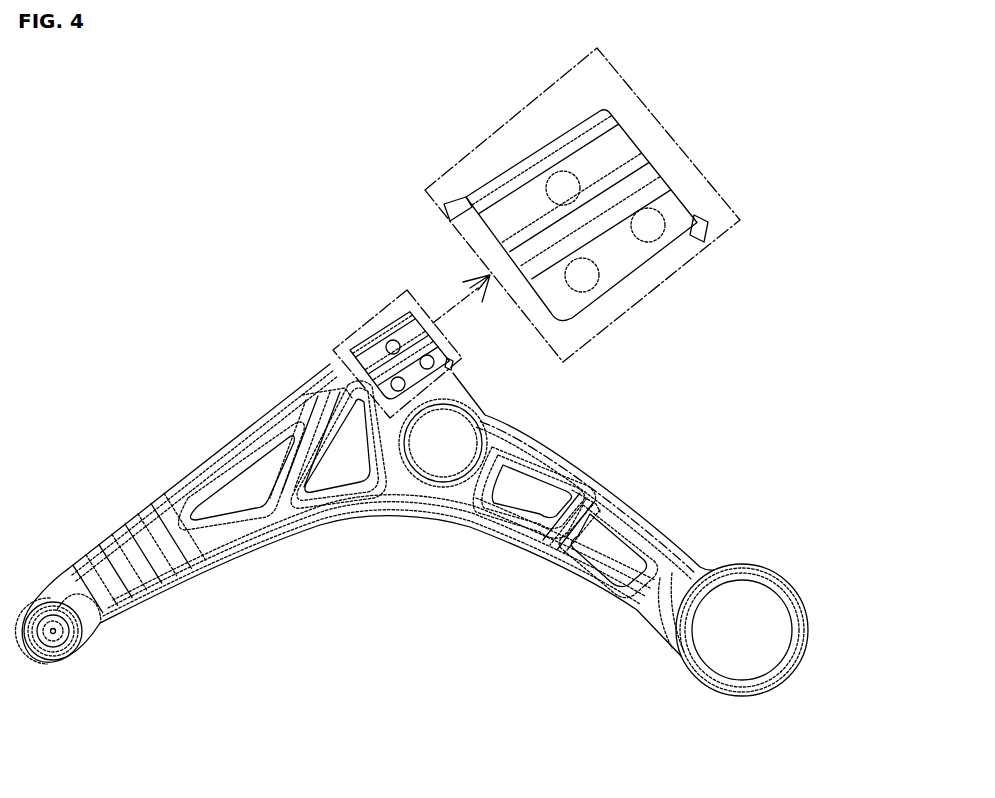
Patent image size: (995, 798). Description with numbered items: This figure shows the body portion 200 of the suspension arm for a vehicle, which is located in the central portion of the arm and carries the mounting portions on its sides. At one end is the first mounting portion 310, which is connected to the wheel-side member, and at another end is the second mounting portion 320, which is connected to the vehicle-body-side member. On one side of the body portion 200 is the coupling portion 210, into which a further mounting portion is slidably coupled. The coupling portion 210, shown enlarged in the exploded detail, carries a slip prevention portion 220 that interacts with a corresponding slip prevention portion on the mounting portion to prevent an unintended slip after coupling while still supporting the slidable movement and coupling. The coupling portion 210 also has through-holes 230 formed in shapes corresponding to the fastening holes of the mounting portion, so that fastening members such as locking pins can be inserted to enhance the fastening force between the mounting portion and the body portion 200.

The body portion 200 is at (390, 508).
The coupling portion 210 is at (360, 330).
The slip prevention portion 220 is at (650, 170).
The through-holes 230 is at (563, 187).
The first mounting portion 310 is at (37, 660).
The second mounting portion 320 is at (723, 697).